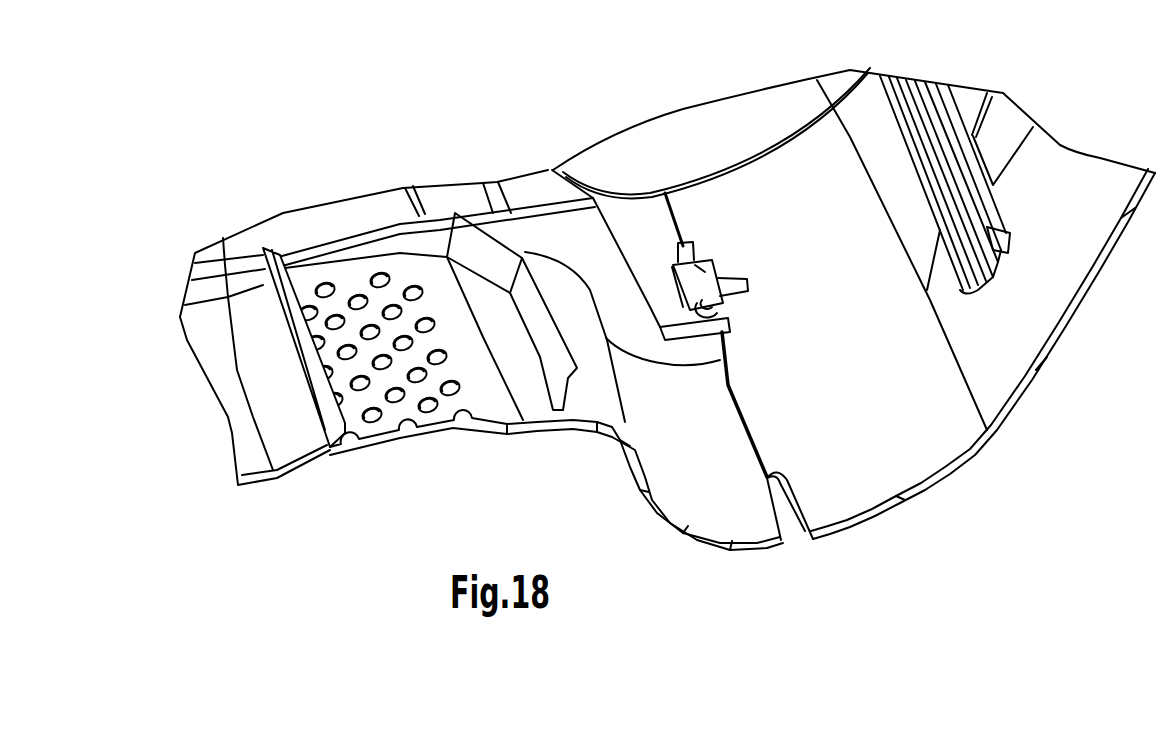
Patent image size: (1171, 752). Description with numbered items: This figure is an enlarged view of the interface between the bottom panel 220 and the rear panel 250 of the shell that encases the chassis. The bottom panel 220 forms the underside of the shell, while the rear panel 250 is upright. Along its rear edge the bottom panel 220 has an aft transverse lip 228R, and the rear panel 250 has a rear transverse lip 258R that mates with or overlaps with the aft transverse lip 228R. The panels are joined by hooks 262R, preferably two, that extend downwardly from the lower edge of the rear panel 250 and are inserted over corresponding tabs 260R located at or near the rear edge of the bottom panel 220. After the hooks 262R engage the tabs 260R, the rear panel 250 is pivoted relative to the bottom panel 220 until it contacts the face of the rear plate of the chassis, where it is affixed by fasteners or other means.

The bottom panel 220 is at (508, 428).
The aft transverse lip 228R is at (767, 478).
The rear panel 250 is at (991, 367).
The rear transverse lip 258R is at (775, 476).
The tab 260R is at (714, 318).
The hook 262R is at (698, 268).